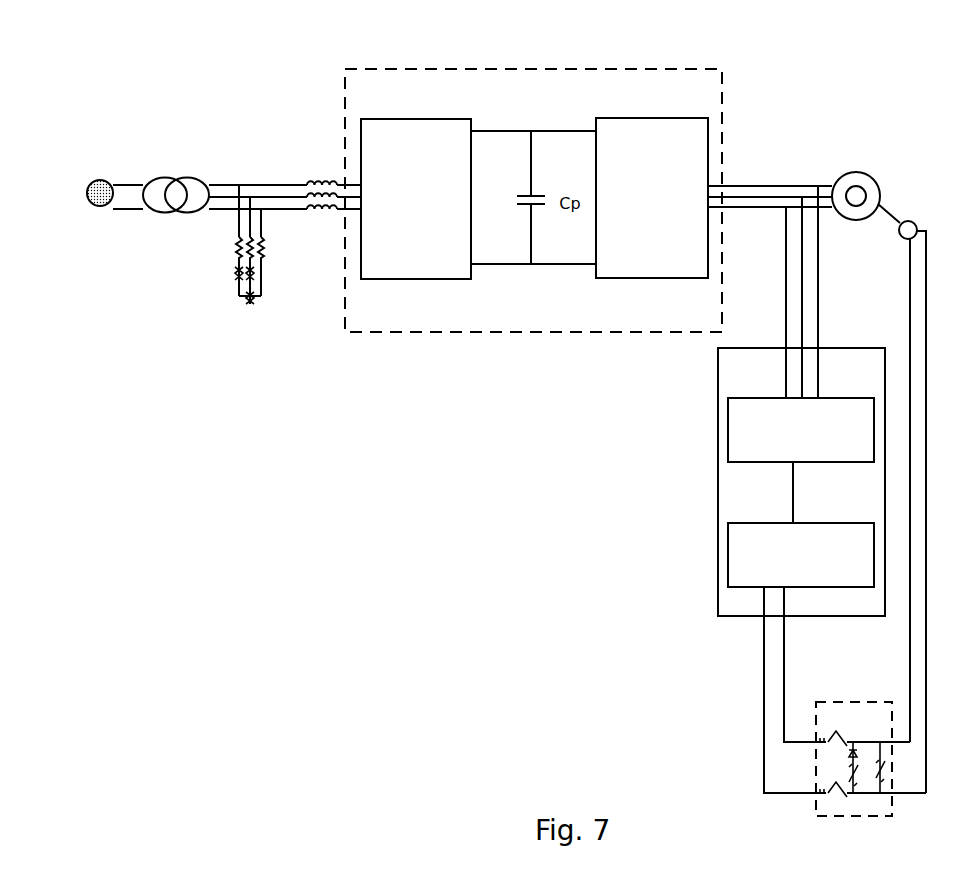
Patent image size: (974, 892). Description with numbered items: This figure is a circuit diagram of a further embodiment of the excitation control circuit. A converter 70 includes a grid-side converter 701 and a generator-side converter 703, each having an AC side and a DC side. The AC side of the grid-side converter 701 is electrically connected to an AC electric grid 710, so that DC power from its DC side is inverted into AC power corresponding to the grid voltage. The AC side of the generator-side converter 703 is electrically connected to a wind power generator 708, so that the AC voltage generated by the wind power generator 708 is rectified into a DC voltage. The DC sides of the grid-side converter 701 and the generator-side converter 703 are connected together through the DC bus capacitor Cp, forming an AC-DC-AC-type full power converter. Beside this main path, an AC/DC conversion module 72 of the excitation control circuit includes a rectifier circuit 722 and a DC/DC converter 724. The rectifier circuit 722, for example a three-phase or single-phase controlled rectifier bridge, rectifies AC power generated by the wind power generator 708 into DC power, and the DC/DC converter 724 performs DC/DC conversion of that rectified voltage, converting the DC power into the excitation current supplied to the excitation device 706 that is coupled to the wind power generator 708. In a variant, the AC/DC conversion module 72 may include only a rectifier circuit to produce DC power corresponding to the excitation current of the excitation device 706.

The converter 70 is at (540, 68).
The grid-side converter 701 is at (416, 199).
The generator-side converter 703 is at (652, 198).
The excitation device 706 is at (915, 221).
The wind power generator 708 is at (857, 172).
The AC electric grid 710 is at (100, 178).
The AC/DC conversion module 72 is at (718, 477).
The rectifier circuit 722 is at (801, 430).
The DC/DC converter 724 is at (801, 555).